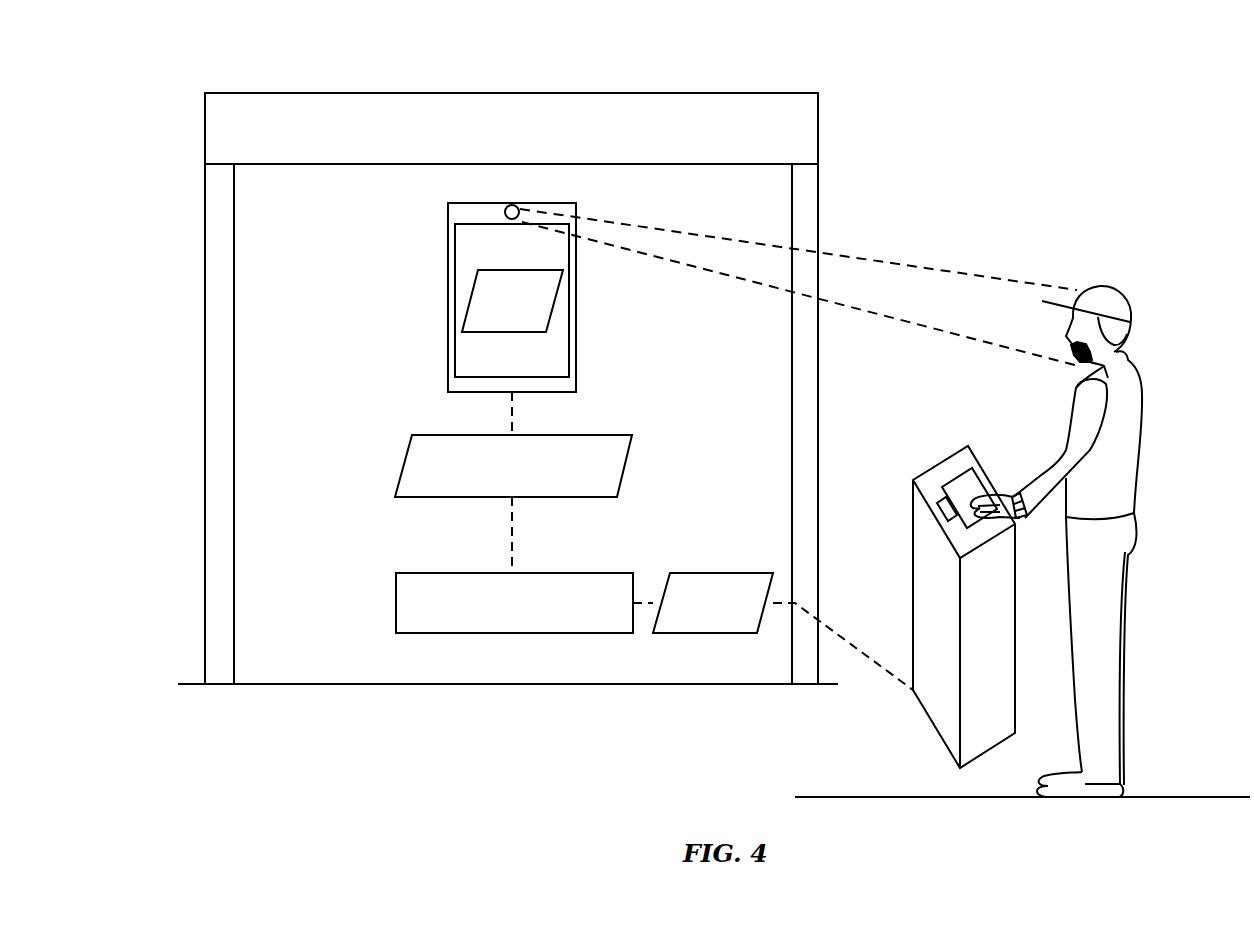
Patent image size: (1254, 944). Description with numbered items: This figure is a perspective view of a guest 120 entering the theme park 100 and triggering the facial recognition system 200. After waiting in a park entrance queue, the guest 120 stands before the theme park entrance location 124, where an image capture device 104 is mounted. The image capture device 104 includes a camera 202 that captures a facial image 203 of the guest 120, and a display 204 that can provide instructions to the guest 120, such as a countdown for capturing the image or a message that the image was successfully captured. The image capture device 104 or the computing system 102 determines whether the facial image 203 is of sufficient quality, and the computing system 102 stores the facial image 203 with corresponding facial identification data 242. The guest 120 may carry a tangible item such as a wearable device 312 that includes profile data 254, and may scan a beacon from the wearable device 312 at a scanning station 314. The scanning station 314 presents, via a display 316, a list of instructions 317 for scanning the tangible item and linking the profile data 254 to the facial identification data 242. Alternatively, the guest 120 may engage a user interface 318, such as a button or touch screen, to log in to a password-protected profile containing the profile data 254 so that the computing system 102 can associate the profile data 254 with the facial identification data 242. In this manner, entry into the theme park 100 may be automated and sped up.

The theme park 100 is at (1116, 62).
The computing system 102 is at (514, 634).
The image capture device 104 is at (578, 297).
The guest 120 is at (1142, 382).
The theme park entrance location 124 is at (512, 93).
The facial recognition system 200 is at (392, 217).
The camera 202 is at (510, 205).
The facial image 203 is at (548, 305).
The display 204 is at (455, 297).
The facial identification data 242 is at (408, 462).
The profile data 254 is at (714, 634).
The wearable device 312 is at (1018, 495).
The scanning station 314 is at (913, 594).
The display 316 is at (952, 477).
The list of instructions 317 is at (986, 468).
The user interface 318 is at (945, 519).